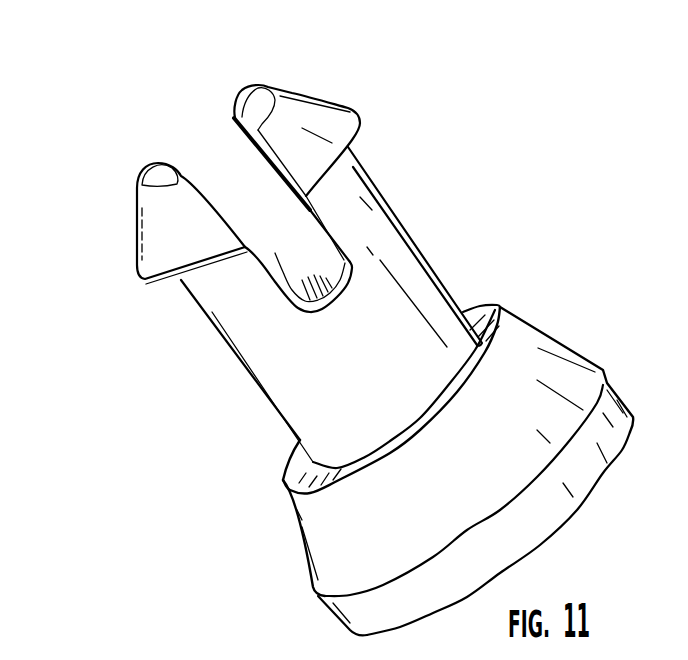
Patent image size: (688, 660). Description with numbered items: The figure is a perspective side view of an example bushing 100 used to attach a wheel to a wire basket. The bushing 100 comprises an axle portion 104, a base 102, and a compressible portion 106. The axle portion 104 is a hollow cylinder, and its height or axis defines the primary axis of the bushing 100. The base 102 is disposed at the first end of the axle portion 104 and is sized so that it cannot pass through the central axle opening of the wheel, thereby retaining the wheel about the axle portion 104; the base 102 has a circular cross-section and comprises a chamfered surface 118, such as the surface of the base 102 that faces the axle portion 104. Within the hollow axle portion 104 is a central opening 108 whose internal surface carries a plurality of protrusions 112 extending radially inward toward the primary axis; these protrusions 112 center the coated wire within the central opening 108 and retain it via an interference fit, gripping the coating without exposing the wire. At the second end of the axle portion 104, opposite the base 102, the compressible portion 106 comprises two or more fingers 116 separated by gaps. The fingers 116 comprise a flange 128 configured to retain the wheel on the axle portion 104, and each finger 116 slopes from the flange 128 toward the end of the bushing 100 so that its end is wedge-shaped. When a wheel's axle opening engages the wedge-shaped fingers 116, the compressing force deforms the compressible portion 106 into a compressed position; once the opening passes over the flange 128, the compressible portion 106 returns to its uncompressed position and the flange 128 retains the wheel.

The bushing 100 is at (418, 66).
The base 102 is at (357, 610).
The axle portion 104 is at (278, 382).
The compressible portion 106 is at (207, 293).
The central opening 108 is at (208, 140).
The protrusions 112 is at (300, 270).
The fingers 116 is at (153, 238).
The chamfered surface 118 is at (317, 543).
The flange 128 is at (356, 149).